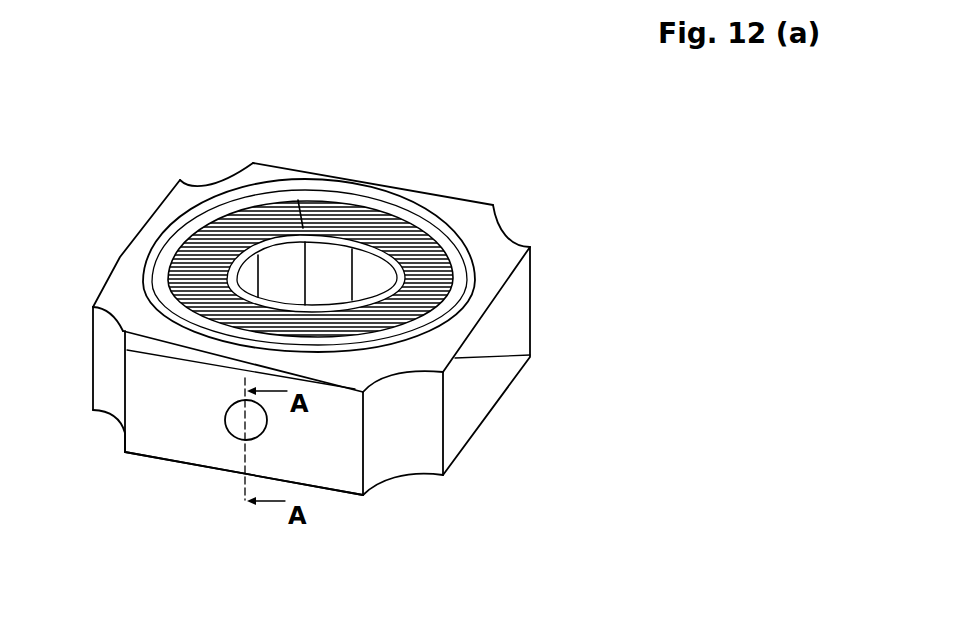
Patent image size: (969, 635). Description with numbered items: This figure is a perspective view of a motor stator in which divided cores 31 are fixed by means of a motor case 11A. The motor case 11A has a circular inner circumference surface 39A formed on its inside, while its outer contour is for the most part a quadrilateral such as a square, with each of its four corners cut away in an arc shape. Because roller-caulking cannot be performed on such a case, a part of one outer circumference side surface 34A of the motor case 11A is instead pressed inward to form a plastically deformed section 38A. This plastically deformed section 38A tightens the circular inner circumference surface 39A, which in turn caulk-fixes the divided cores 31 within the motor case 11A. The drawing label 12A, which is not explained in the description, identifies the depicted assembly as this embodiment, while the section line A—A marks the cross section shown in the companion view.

The bearing holder 12A is at (468, 148).
The motor case 11A is at (481, 295).
The circular inner circumference surface 39A is at (457, 320).
The divided cores 31 is at (160, 300).
The outer circumference side surface 34A is at (343, 440).
The plastically deformed section 38A is at (257, 423).